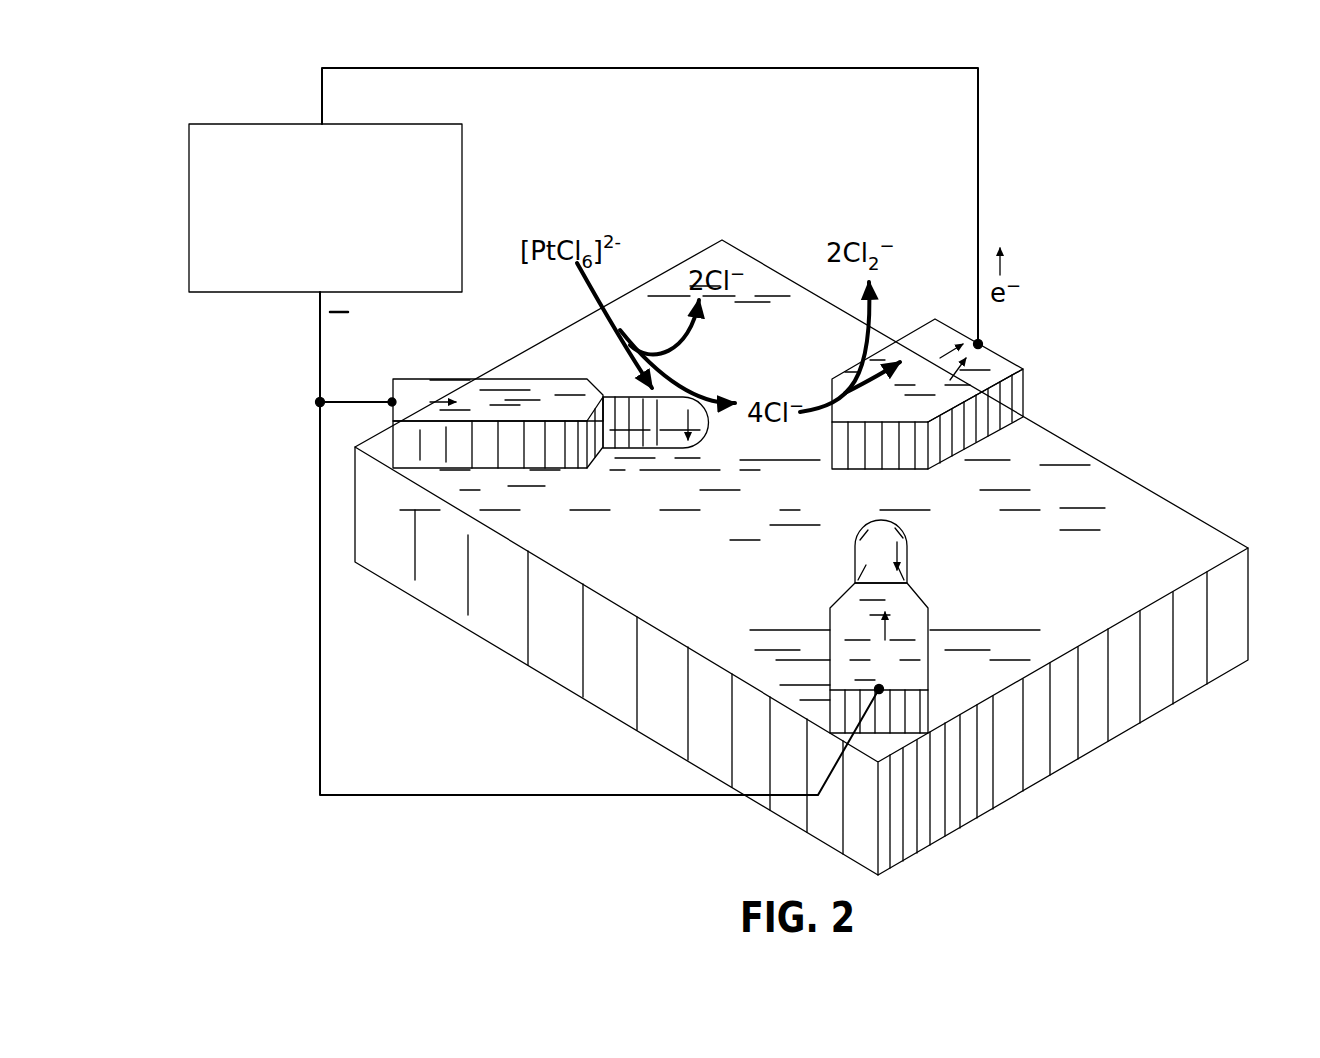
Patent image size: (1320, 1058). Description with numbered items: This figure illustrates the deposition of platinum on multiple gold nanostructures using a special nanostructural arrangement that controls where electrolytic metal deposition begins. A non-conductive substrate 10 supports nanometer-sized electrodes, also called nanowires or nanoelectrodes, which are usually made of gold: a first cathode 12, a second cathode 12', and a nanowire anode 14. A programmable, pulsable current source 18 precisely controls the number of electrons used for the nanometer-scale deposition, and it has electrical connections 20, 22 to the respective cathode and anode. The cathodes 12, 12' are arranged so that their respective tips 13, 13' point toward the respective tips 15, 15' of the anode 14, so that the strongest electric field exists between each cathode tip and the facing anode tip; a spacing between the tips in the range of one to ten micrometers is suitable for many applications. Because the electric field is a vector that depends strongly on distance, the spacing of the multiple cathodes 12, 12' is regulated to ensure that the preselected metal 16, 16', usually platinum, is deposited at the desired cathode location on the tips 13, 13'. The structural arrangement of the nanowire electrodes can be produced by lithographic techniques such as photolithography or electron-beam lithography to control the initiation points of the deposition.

The non-conductive substrate 10 is at (503, 622).
The cathode 12 is at (495, 447).
The nanoelectrode tip 13 is at (689, 416).
The anode 14 is at (939, 417).
The nanoelectrode tip 15 is at (898, 417).
The nanoelectrode tip 15' is at (880, 467).
The preselected metal 16 is at (713, 378).
The preselected metal 16' is at (941, 527).
The cathode 12' is at (849, 637).
The nanoelectrode tip 13' is at (938, 538).
The programmable pulsing current source 18 is at (462, 185).
The electrical connection 20 is at (318, 368).
The electrical connection 22 is at (735, 70).